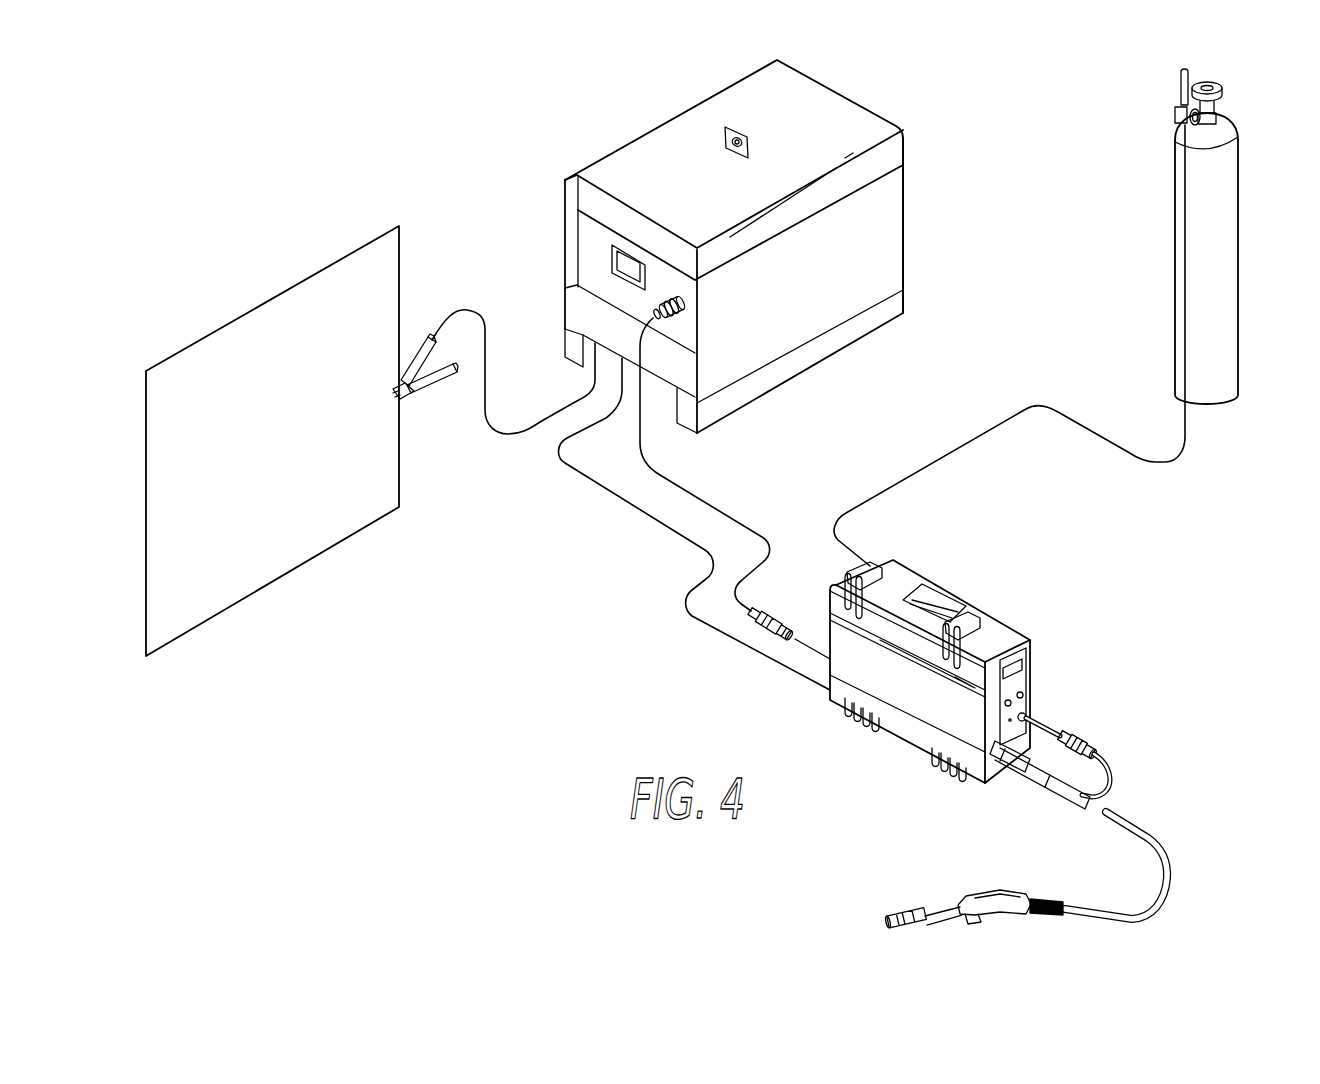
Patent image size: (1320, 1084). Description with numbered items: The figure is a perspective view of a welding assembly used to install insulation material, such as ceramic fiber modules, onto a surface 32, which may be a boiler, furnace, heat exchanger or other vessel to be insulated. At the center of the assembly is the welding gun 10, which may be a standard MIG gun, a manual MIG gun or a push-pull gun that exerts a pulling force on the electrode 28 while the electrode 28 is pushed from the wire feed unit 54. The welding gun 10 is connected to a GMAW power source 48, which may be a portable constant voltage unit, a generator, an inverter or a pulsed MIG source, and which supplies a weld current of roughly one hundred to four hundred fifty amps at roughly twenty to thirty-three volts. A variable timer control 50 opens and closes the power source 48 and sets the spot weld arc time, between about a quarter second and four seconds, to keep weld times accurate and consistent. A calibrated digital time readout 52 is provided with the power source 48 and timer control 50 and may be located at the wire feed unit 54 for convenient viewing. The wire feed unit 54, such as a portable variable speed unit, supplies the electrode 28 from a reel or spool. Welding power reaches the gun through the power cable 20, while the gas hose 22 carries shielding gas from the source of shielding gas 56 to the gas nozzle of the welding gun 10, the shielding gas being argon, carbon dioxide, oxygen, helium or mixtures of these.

The welding gun 10 is at (975, 898).
The power cable 20 is at (730, 517).
The gas hose 22 is at (1108, 442).
The electrode 28 is at (886, 915).
The surface 32 is at (292, 452).
The power source 48 is at (813, 289).
The timer control 50 is at (622, 260).
The digital time readout 52 is at (1025, 664).
The wire feed unit 54 is at (926, 696).
The source of shielding gas 56 is at (1230, 263).